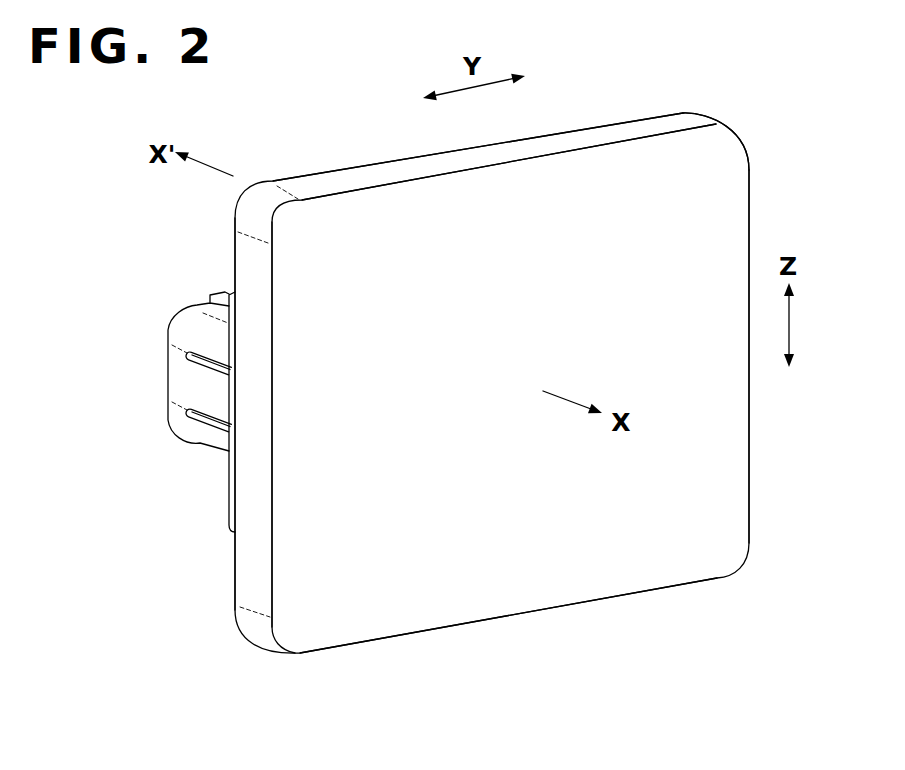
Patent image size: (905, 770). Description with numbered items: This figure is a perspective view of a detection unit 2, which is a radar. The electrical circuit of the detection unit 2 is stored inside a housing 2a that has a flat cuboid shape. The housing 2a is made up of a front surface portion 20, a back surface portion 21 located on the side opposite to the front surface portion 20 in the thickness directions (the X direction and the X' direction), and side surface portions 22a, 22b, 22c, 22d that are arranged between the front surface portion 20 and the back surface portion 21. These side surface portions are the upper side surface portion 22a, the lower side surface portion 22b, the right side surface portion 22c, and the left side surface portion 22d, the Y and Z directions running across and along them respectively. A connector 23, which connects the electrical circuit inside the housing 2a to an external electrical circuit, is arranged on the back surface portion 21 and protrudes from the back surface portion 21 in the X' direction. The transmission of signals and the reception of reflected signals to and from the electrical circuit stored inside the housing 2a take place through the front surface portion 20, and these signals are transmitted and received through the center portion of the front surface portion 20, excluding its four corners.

The detection unit 2 is at (328, 118).
The housing 2a is at (700, 113).
The front surface portion 20 is at (613, 578).
The back surface portion 21 is at (236, 258).
The upper side surface portion 22a is at (619, 132).
The lower side surface portion 22b is at (504, 620).
The right side surface portion 22c is at (245, 574).
The left side surface portion 22d is at (749, 458).
The connector 23 is at (197, 440).